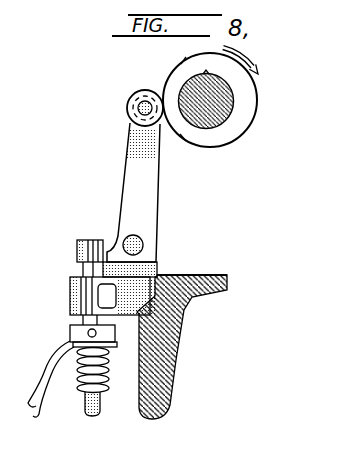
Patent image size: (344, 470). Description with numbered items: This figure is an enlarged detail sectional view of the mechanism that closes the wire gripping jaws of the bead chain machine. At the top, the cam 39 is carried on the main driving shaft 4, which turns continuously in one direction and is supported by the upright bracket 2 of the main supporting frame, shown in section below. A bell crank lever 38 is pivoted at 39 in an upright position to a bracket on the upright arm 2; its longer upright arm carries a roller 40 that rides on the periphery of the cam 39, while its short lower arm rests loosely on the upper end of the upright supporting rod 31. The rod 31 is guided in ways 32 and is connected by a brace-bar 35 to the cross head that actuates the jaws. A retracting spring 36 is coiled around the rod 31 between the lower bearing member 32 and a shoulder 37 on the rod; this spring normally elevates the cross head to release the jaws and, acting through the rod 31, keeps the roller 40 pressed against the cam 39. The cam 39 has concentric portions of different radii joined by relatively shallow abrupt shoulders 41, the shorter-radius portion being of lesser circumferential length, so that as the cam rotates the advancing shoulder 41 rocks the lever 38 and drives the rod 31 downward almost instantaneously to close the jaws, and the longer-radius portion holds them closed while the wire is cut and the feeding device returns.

The upright bracket 2 is at (156, 358).
The main driving shaft 4 is at (234, 102).
The upright supporting rod 31 is at (92, 417).
The ways 32 is at (70, 298).
The brace-bar 35 is at (47, 371).
The retracting spring 36 is at (78, 393).
The shoulder 37 is at (70, 333).
The bell crank lever 38 is at (146, 203).
The cam 39 is at (233, 141).
The roller 40 is at (127, 106).
The abrupt shoulders 41 is at (183, 61).